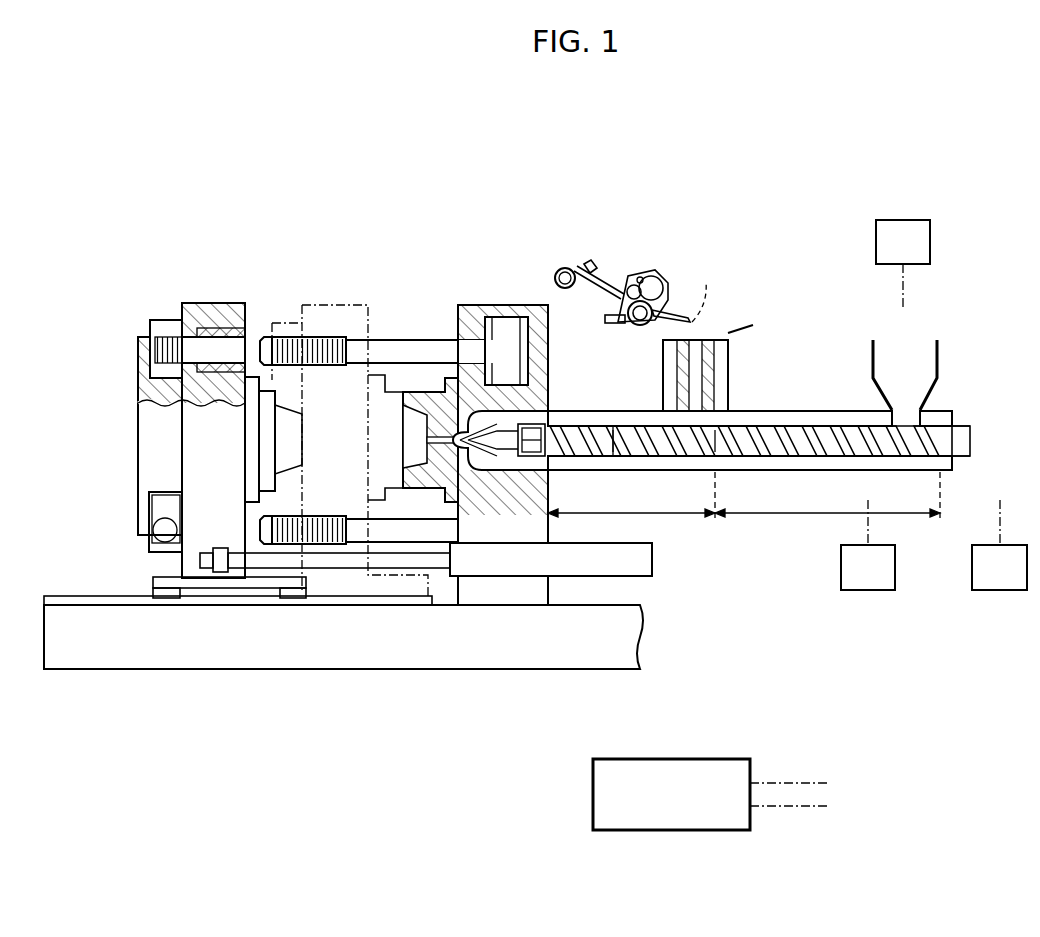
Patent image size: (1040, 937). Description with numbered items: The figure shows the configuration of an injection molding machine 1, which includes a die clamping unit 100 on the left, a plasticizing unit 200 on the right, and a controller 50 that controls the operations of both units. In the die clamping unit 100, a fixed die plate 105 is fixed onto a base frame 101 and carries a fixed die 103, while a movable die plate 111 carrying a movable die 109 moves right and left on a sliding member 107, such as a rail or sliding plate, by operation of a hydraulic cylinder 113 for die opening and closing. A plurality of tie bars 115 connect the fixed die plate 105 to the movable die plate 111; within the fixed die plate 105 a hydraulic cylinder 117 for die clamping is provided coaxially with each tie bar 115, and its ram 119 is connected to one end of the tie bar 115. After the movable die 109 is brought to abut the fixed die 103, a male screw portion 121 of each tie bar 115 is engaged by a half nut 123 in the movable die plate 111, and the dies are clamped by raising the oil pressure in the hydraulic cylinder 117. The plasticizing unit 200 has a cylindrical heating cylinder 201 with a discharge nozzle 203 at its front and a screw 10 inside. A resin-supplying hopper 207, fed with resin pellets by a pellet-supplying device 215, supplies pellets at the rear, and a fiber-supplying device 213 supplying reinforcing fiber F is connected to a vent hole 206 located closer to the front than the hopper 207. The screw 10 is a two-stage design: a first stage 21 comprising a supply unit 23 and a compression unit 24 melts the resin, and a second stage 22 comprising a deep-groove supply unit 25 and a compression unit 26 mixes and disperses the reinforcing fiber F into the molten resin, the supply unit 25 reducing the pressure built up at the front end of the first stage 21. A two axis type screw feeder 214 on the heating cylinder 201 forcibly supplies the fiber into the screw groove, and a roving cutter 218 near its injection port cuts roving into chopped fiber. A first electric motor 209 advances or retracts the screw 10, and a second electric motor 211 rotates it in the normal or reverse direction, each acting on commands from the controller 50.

The injection molding machine 1 is at (578, 155).
The die clamping unit 100 is at (362, 192).
The movable die plate 111 is at (207, 303).
The half nut 123 is at (160, 308).
The male screw portion 121 is at (287, 330).
The tie bars 115 is at (437, 338).
The fixed die 103 is at (410, 392).
The discharge nozzle 203 is at (450, 437).
The movable die 109 is at (298, 472).
The hydraulic cylinder for die clamping 117 is at (546, 305).
The ram 119 is at (505, 335).
The hydraulic cylinder for die opening and closing 113 is at (483, 578).
The fixed die plate 105 is at (550, 352).
The heating cylinder 201 is at (556, 410).
The vent hole 206 is at (678, 414).
The screw 10 is at (630, 425).
The second stage 22 is at (631, 506).
The first stage 21 is at (827, 506).
The compression unit 26 is at (652, 456).
The supply unit 25 is at (703, 456).
The compression unit 24 is at (832, 456).
The supply unit 23 is at (908, 456).
The two axis type screw feeder 214 is at (730, 387).
The resin-supplying hopper 207 is at (940, 358).
The plasticizing unit 200 is at (670, 240).
The roving cutter 218 is at (640, 270).
The fiber-supplying device 213 is at (757, 283).
The reinforcing fiber F is at (702, 287).
The pellet-supplying device 215 is at (905, 220).
The first electric motor 209 is at (864, 592).
The second electric motor 211 is at (995, 592).
The controller 50 is at (593, 793).
The sliding member 107 is at (113, 596).
The base frame 101 is at (600, 670).